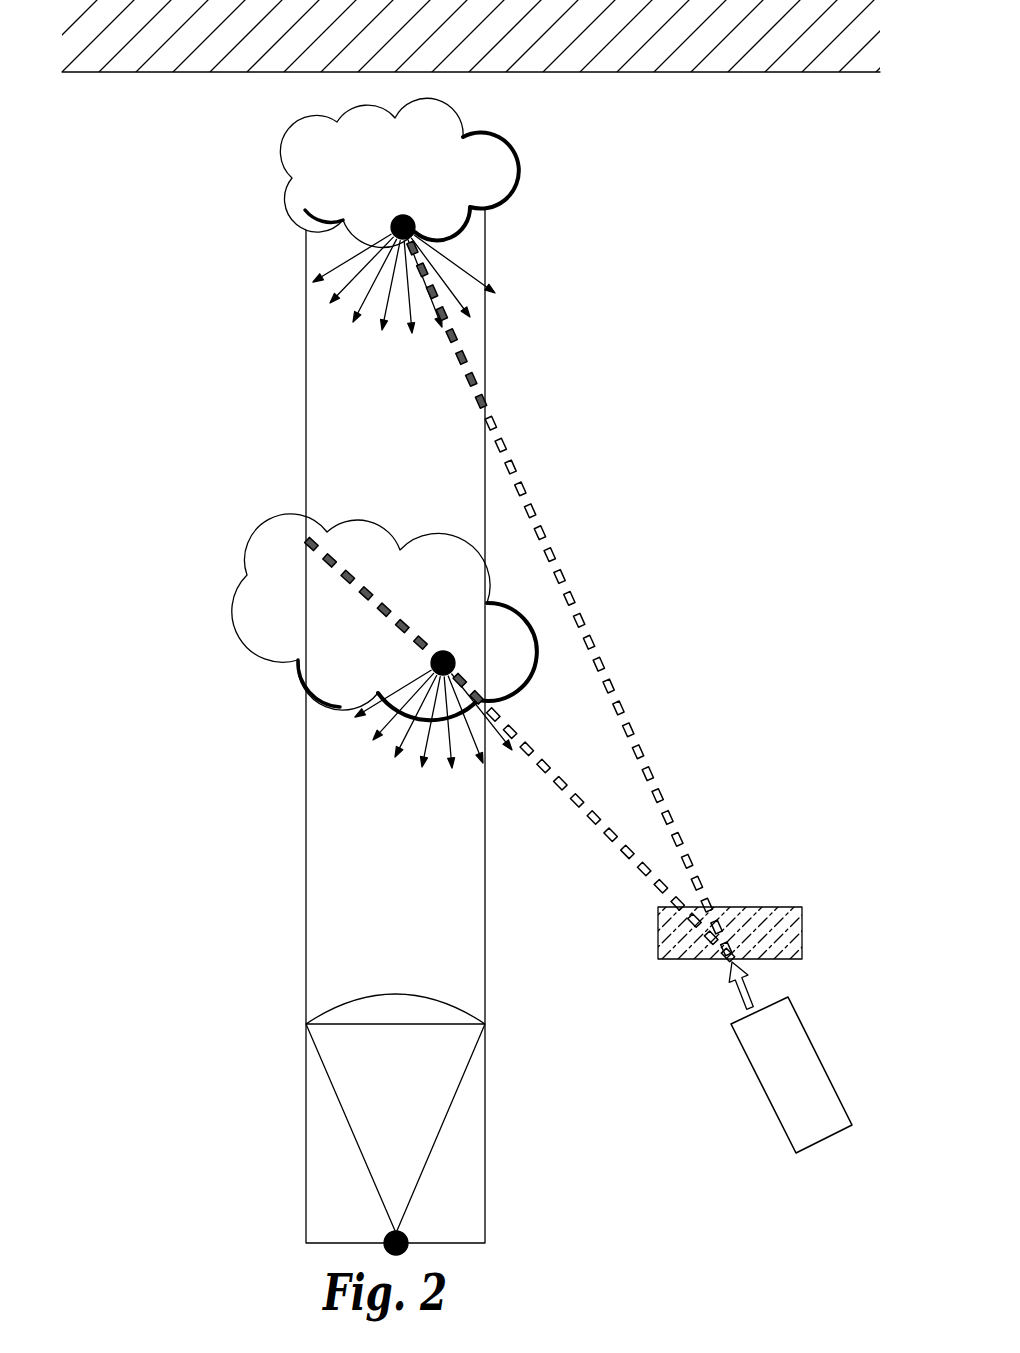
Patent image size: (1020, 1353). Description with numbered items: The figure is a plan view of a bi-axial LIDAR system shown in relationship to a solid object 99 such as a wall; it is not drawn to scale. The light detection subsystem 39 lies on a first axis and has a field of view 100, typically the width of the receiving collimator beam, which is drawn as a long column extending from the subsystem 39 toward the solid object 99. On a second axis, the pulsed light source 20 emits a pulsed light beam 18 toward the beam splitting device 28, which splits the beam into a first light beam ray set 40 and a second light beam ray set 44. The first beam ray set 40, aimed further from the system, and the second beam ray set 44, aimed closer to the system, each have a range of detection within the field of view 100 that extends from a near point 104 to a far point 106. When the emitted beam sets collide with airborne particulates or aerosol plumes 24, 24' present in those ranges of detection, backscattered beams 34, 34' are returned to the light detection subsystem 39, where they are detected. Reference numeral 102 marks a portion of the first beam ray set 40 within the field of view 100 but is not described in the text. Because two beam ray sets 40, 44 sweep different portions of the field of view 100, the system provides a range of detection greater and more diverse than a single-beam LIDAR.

The solid object 99 is at (489, 51).
The field of view 100 is at (487, 352).
The airborne particulate 24 is at (399, 172).
The backscattered beam 34 is at (430, 276).
The first scattered beam portion 102 is at (487, 407).
The first light beam ray set 40 is at (528, 498).
The far point 106 is at (308, 540).
The second light beam ray set 44 is at (342, 578).
The airborne particulate 24' is at (384, 617).
The backscattered beam 34' is at (383, 719).
The near point 104 is at (505, 702).
The beam splitting device 28 is at (800, 918).
The pulsed light beam 18 is at (750, 992).
The pulsed light source 20 is at (807, 1090).
The light detection subsystem 39 is at (273, 1215).